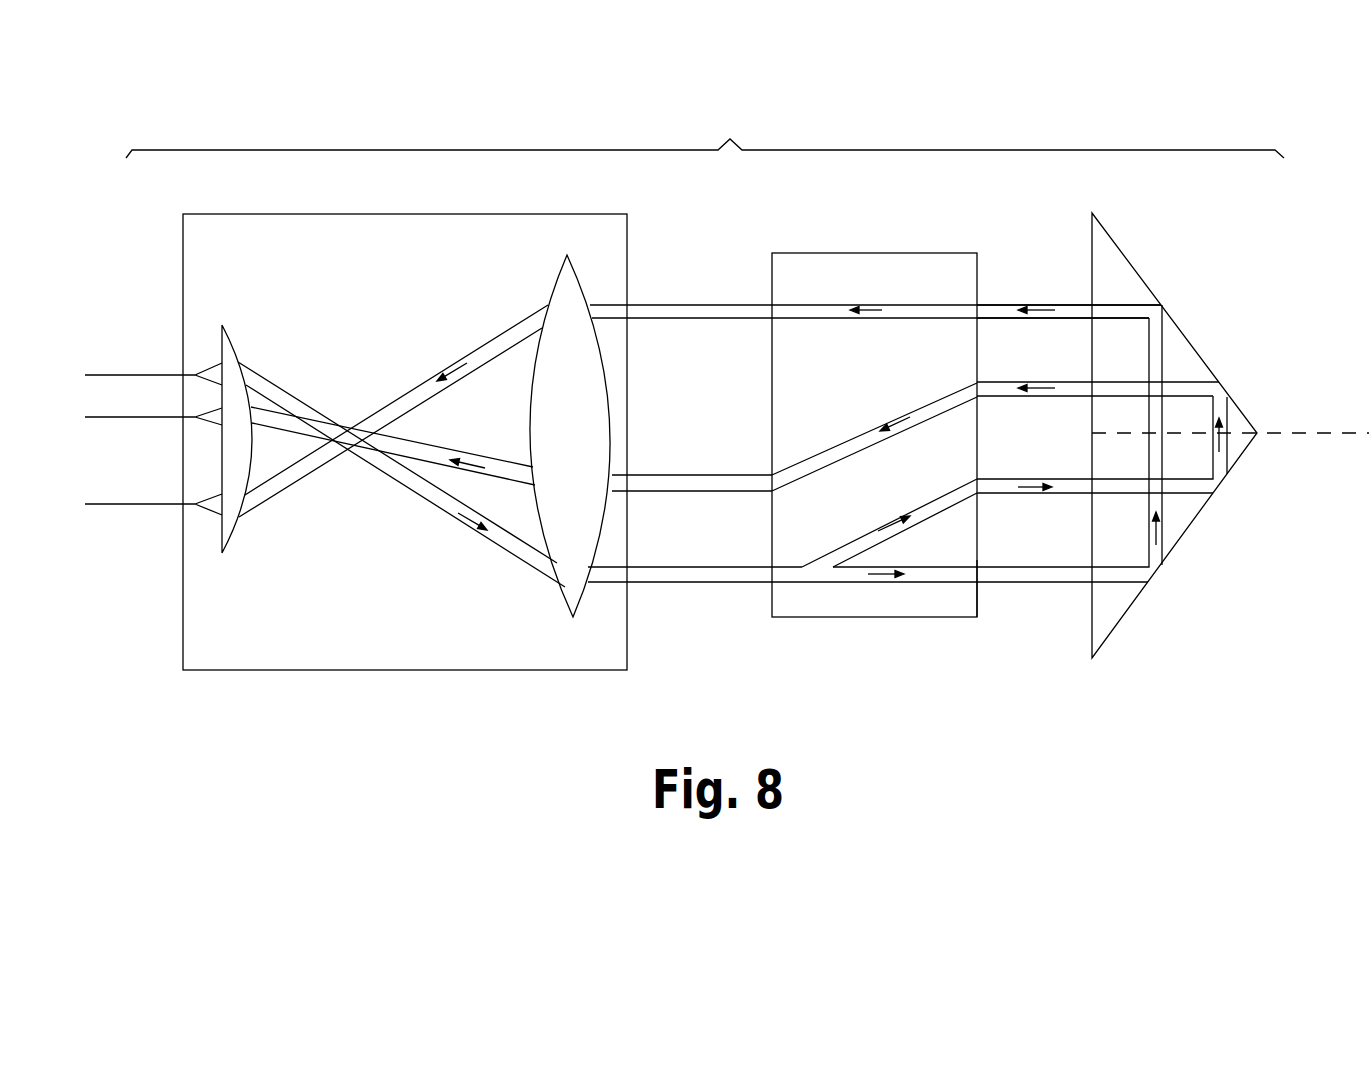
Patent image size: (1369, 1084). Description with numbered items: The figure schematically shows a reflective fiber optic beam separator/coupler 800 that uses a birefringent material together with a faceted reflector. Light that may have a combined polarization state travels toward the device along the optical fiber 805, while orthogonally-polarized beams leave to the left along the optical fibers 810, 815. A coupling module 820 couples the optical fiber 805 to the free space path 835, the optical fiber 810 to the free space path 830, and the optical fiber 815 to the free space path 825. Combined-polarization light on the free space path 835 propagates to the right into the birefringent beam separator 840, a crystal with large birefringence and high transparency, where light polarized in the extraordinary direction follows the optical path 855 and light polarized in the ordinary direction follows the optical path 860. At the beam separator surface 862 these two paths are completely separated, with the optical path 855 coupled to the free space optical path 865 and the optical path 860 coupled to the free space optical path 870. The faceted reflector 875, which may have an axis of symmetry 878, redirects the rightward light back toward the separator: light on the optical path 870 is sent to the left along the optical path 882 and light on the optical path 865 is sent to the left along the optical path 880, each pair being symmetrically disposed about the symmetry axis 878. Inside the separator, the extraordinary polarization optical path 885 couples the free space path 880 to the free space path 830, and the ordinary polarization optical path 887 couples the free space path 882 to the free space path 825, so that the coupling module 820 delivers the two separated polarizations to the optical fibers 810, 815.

The reflective fiber optic beam separator/coupler 800 is at (705, 133).
The optical fiber 805 is at (97, 375).
The optical fiber 810 is at (97, 417).
The optical fiber 815 is at (97, 504).
The coupling module 820 is at (410, 214).
The free space path 825 is at (668, 305).
The free space path 830 is at (655, 475).
The free space path 835 is at (665, 582).
The birefringent beam separator 840 is at (873, 253).
The optical path 855 is at (864, 536).
The optical path 860 is at (912, 567).
The beam separator surface 862 is at (977, 605).
The free space optical path 865 is at (1006, 479).
The free space optical path 870 is at (1006, 567).
The faceted reflector 875 is at (1129, 608).
The axis of symmetry 878 is at (1288, 433).
The optical path 880 is at (1006, 382).
The optical path 882 is at (1006, 305).
The extraordinary polarization optical path 885 is at (838, 445).
The ordinary polarization optical path 887 is at (870, 320).